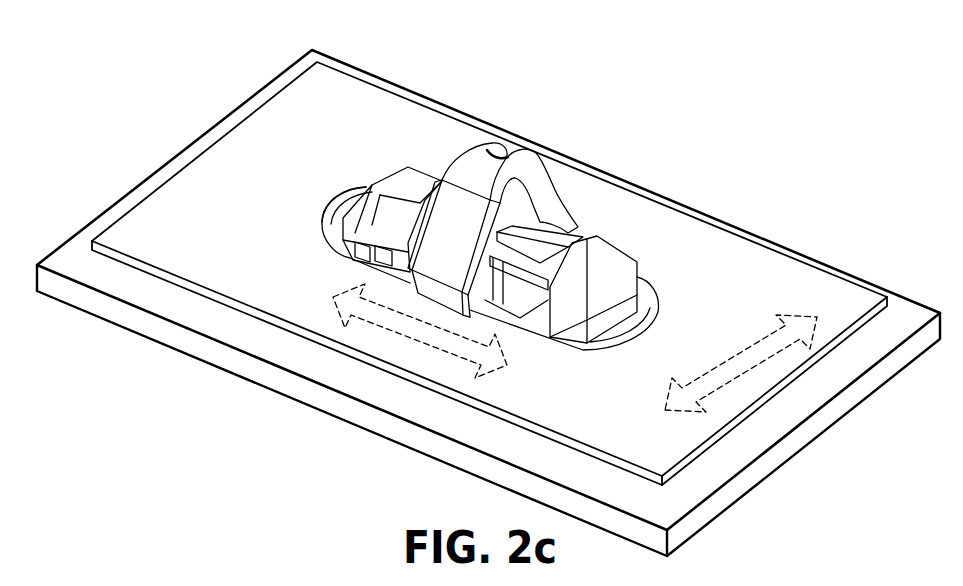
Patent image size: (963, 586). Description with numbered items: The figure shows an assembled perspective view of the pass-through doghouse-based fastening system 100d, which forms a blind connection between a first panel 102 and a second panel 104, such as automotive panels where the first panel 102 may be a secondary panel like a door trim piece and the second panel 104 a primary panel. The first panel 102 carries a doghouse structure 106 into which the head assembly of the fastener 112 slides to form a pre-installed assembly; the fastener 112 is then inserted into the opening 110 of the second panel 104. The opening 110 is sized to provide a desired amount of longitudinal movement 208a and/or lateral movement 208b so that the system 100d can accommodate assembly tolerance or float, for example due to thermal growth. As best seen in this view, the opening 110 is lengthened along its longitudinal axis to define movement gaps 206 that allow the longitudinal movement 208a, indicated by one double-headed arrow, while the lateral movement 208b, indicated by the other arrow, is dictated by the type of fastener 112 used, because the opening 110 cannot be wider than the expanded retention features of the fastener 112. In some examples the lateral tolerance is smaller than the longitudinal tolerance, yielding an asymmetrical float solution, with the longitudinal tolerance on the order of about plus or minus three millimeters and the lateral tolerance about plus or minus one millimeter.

The pass-through doghouse-based fastening system 100d is at (795, 90).
The first panel 102 is at (173, 160).
The second panel 104 is at (233, 123).
The doghouse structure 106 is at (392, 165).
The opening 110 is at (323, 205).
The fastener 112 is at (467, 157).
The movement gaps 206 is at (328, 224).
The longitudinal movement 208a is at (510, 367).
The lateral movement 208b is at (752, 357).